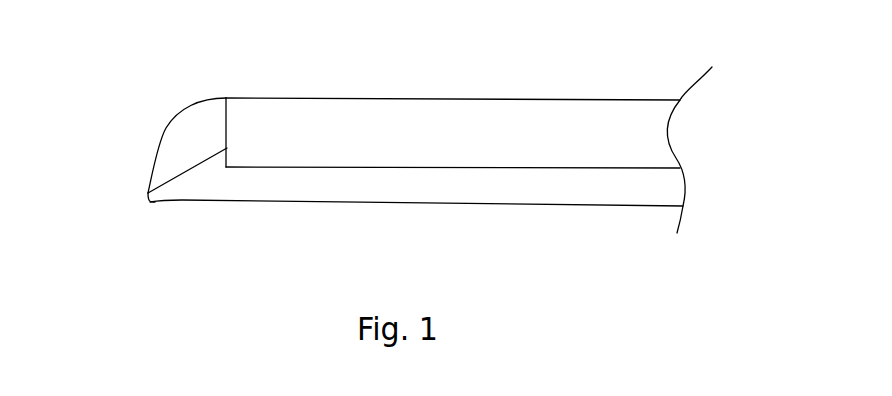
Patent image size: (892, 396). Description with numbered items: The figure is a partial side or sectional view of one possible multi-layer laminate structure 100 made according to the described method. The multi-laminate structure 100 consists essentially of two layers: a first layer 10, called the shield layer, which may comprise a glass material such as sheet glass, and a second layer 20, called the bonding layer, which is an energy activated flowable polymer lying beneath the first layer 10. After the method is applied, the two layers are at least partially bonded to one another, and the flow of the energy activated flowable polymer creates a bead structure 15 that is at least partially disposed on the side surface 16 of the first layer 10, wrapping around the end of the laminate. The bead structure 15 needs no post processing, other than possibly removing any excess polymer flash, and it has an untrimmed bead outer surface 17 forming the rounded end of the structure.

The multi-laminate structure 100 is at (424, 43).
The first layer 10 is at (493, 117).
The second layer 20 is at (555, 193).
The bead structure 15 is at (188, 138).
The side surface 16 is at (150, 193).
The bead outer surface 17 is at (192, 102).